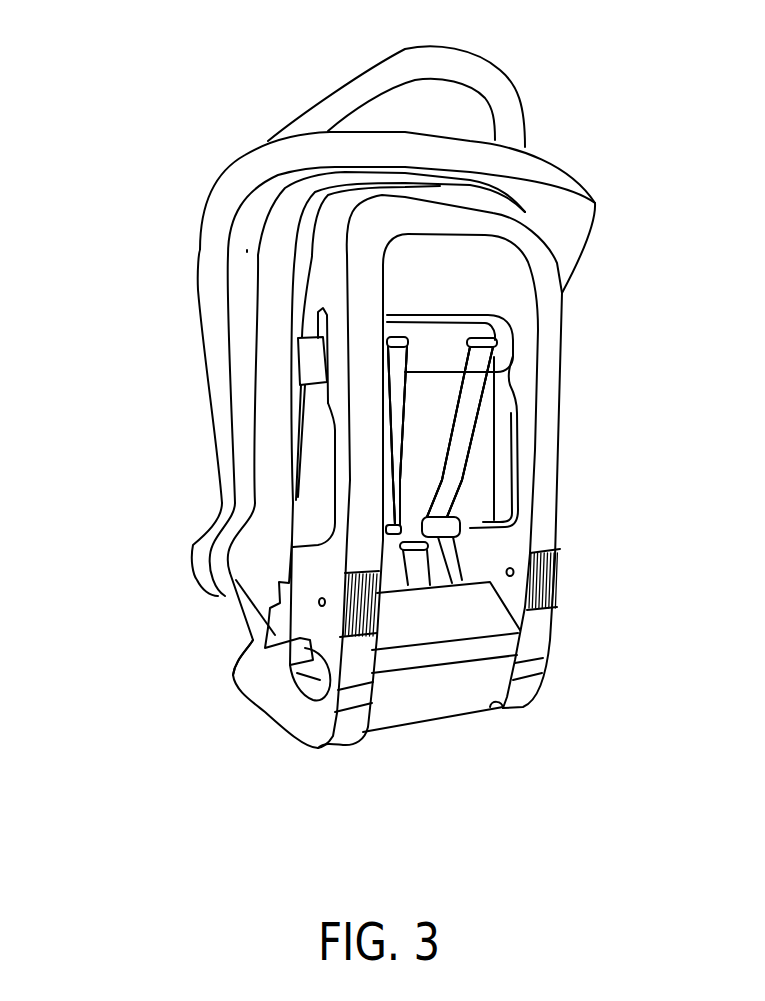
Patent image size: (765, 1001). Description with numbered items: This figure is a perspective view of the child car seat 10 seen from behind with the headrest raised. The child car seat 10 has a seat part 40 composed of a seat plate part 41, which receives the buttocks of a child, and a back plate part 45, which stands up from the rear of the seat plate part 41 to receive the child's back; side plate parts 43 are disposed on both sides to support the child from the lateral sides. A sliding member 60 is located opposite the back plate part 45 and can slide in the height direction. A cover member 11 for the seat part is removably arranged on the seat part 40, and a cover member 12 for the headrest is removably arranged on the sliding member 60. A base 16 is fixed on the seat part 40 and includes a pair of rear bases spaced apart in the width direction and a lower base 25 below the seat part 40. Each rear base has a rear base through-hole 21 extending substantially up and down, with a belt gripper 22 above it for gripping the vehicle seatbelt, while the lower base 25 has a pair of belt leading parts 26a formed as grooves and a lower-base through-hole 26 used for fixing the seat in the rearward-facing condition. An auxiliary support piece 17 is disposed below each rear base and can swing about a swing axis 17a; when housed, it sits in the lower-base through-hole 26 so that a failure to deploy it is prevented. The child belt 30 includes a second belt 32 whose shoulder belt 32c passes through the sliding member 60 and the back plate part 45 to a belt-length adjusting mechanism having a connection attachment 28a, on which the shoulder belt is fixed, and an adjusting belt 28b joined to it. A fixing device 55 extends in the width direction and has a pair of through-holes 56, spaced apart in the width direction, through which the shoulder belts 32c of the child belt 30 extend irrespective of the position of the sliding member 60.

The child car seat 10 is at (623, 82).
The cover member for seat part 11 is at (246, 168).
The cover member for headrest 12 is at (327, 107).
The base 16 is at (532, 720).
The auxiliary support piece 17 is at (357, 673).
The swing axis 17a is at (318, 604).
The rear base through-hole 21 is at (312, 480).
The belt gripper 22 is at (300, 367).
The lower base 25 is at (337, 448).
The lower-base through-hole 26 is at (292, 660).
The belt leading part 26a is at (250, 667).
The connection attachment 28a is at (447, 545).
The adjusting belt 28b is at (422, 580).
The child belt 30 is at (393, 358).
The second belt 32 is at (440, 436).
The shoulder belt 32c is at (440, 436).
The seat part 40 is at (172, 171).
The seat plate part 41 is at (230, 594).
The side plate part 43 is at (263, 282).
The back plate part 45 is at (480, 488).
The fixing device 55 is at (442, 340).
The through-hole 56 is at (400, 335).
The sliding member 60 is at (460, 108).